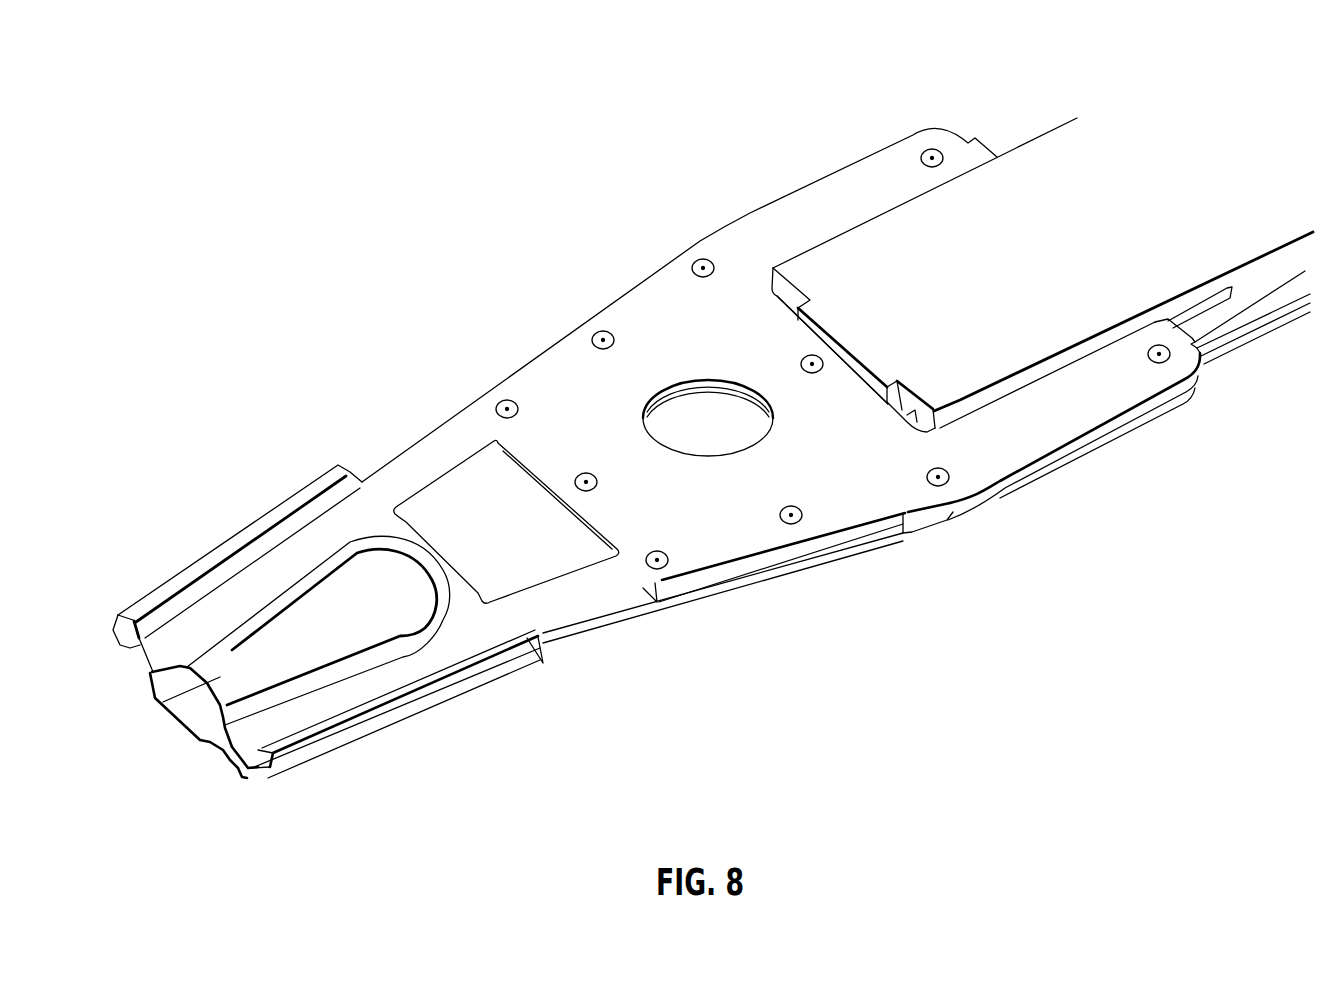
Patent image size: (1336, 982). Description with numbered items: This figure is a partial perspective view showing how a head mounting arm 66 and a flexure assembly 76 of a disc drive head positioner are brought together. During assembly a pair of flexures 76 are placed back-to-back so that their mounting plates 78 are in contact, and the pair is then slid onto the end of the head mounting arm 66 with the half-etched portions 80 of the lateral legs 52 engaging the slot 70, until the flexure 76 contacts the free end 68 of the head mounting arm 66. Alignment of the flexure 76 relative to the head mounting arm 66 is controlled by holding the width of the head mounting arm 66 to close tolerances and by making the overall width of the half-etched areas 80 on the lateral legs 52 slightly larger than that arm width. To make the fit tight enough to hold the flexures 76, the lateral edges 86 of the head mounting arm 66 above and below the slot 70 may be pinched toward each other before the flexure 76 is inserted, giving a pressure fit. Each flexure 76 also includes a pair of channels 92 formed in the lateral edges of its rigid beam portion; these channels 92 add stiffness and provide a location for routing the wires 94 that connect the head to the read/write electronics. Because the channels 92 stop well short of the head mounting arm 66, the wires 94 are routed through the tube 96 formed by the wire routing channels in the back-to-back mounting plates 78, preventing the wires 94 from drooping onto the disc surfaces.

The lateral legs 52 is at (848, 185).
The head mounting arm 66 is at (1030, 160).
The free end 68 is at (845, 356).
The slot 70 is at (1207, 305).
The flexure 76 is at (363, 392).
The mounting plates 78 is at (1117, 437).
The half-etched portions 80 is at (915, 420).
The lateral edges 86 is at (1055, 355).
The channels 92 is at (295, 750).
The wires 94 is at (593, 640).
The tube 96 is at (928, 518).